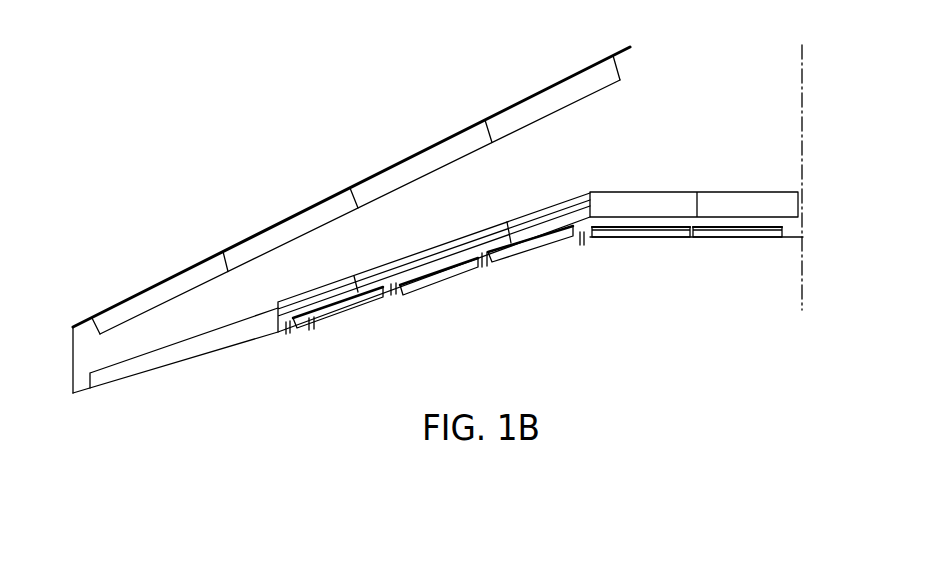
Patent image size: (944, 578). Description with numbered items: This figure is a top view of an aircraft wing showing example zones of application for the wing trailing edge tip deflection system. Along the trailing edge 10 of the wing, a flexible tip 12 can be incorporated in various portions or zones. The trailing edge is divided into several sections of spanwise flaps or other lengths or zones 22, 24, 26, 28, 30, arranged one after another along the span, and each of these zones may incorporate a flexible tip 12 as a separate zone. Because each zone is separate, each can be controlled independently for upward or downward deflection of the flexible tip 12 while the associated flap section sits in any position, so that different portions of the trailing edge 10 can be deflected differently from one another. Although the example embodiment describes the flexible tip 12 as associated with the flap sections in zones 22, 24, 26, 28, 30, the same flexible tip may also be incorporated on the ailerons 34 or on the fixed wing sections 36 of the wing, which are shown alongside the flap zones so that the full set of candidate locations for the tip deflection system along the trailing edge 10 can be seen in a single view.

The trailing edge 10 is at (438, 275).
The flexible tip 12 is at (548, 310).
The first zone of spanwise flaps 22 is at (378, 297).
The second zone of spanwise flaps 24 is at (473, 265).
The third zone of spanwise flaps 26 is at (558, 237).
The fourth zone of spanwise flaps 28 is at (667, 231).
The fifth zone of spanwise flaps 30 is at (757, 231).
The aileron 34 is at (176, 356).
The fixed wing section 36 is at (288, 334).